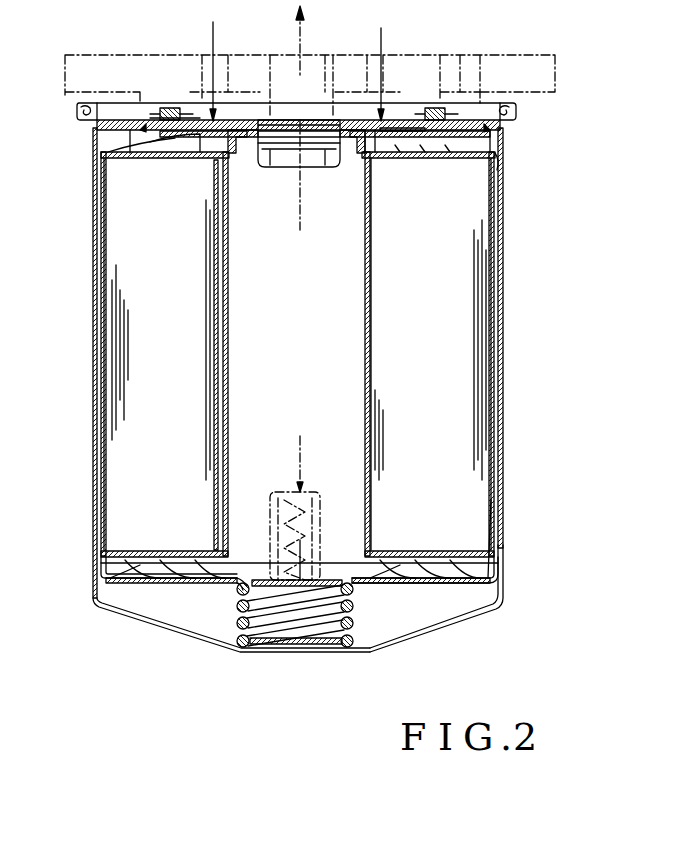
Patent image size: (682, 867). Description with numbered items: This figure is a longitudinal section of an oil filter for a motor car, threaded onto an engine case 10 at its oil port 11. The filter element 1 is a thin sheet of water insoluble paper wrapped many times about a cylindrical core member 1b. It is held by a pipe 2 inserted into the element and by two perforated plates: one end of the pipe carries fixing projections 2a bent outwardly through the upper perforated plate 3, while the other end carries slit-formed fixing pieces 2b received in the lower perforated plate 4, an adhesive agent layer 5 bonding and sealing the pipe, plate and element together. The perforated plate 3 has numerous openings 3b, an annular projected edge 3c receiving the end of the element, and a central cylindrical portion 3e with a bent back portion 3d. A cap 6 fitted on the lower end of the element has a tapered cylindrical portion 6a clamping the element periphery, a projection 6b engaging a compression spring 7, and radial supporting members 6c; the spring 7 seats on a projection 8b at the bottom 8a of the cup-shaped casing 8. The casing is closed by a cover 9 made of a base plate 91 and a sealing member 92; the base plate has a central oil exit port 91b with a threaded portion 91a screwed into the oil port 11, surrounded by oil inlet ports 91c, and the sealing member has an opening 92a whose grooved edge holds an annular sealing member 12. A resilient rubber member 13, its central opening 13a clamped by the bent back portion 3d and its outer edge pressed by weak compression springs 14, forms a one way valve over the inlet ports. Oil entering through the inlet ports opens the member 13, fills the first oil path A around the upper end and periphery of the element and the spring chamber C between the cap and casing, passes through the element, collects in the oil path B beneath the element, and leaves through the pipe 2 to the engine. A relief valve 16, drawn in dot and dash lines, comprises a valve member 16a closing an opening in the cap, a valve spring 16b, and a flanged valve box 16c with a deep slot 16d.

The filter element 1 is at (423, 349).
The cylindrical core member 1b is at (365, 304).
The pipe 2 is at (229, 320).
The fixing projections 2a is at (200, 152).
The fixing pieces 2b is at (215, 583).
The perforated plate 3 is at (497, 154).
The openings 3b is at (447, 146).
The annular projected edge 3c is at (502, 166).
The bent back portion 3d is at (356, 155).
The cylindrical portion 3e is at (236, 155).
The perforated plate 4 is at (106, 552).
The adhesive agent layer 5 is at (368, 545).
The cap 6 is at (502, 588).
The tapered cylindrical portion 6a is at (504, 520).
The projection 6b is at (354, 592).
The radial supporting members 6c is at (500, 560).
The compression spring 7 is at (238, 622).
The casing 8 is at (93, 535).
The bottom 8a is at (132, 630).
The projection 8b is at (352, 645).
The cover 9 is at (478, 118).
The engine case 10 is at (70, 104).
The oil port 11 is at (294, 181).
The annular sealing member 12 is at (170, 108).
The member 13 is at (180, 138).
The central opening 13a is at (258, 133).
The compression springs 14 is at (378, 142).
The relief valve 16 is at (297, 436).
The valve member 16a is at (318, 560).
The valve spring 16b is at (306, 510).
The valve box 16c is at (284, 492).
The deep slot 16d is at (282, 528).
The base plate 91 is at (505, 134).
The threaded portion 91a is at (282, 170).
The oil exit port 91b is at (313, 170).
The oil inlet ports 91c is at (405, 128).
The sealing member 92 is at (458, 110).
The opening 92a is at (176, 108).
The first oil path A is at (100, 145).
The oil path B is at (101, 570).
The spring chamber C is at (452, 617).